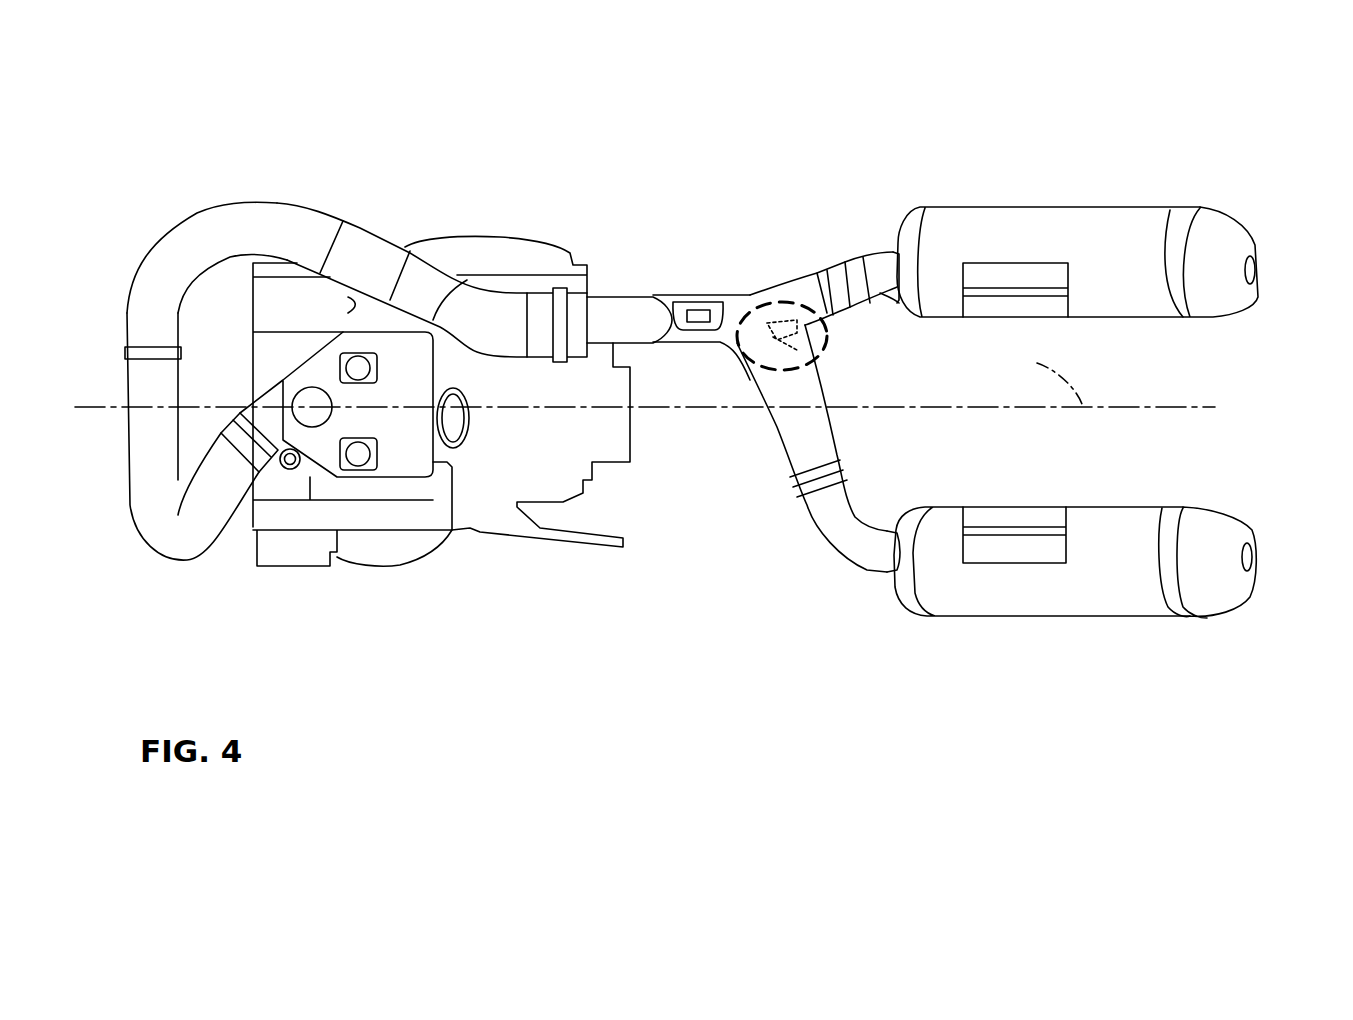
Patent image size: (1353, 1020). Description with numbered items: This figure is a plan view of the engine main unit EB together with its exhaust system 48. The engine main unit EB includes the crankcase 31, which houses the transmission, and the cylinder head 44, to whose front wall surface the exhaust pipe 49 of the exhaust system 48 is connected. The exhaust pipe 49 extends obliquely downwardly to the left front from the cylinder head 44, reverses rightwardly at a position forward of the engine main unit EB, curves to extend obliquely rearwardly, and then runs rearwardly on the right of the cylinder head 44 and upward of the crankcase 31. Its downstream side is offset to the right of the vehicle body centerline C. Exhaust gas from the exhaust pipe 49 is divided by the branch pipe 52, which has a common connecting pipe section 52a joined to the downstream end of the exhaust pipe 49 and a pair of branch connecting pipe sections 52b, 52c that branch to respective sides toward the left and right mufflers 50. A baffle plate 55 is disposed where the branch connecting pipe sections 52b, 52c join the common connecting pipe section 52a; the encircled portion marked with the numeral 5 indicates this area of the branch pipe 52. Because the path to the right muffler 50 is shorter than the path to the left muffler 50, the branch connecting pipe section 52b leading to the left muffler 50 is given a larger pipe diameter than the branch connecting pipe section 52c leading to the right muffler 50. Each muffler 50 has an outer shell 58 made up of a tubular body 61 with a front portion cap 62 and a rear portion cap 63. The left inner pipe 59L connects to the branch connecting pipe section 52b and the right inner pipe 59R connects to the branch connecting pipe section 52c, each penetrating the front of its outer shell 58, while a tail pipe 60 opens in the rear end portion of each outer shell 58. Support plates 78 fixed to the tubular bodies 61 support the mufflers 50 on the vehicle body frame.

The crankcase 31 is at (507, 528).
The cylinder head 44 is at (295, 373).
The exhaust system 48 is at (375, 234).
The exhaust pipe 49 is at (195, 243).
The muffler 50 is at (1066, 392).
The branch pipe 52 is at (709, 382).
The common connecting pipe section 52a is at (607, 333).
The branch connecting pipe section 52b is at (783, 424).
The branch connecting pipe section 52c is at (800, 292).
The baffle plate 55 is at (752, 368).
The outer shell 58 is at (1085, 368).
The inner pipe 59R is at (867, 270).
The inner pipe 59L is at (843, 523).
The tail pipe 60 is at (1258, 273).
The tubular body 61 is at (1098, 307).
The front portion cap 62 is at (893, 292).
The rear portion cap 63 is at (1213, 310).
The support plate 78 is at (1028, 292).
The engine main unit EB is at (397, 572).
The vehicle body centerline C is at (1051, 382).
The section view indicator 5 is at (838, 353).